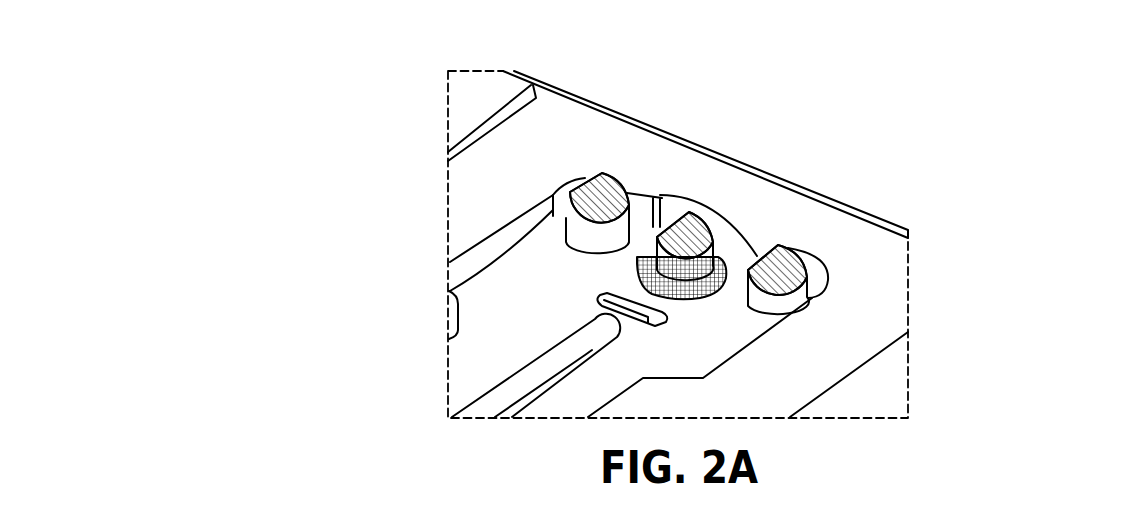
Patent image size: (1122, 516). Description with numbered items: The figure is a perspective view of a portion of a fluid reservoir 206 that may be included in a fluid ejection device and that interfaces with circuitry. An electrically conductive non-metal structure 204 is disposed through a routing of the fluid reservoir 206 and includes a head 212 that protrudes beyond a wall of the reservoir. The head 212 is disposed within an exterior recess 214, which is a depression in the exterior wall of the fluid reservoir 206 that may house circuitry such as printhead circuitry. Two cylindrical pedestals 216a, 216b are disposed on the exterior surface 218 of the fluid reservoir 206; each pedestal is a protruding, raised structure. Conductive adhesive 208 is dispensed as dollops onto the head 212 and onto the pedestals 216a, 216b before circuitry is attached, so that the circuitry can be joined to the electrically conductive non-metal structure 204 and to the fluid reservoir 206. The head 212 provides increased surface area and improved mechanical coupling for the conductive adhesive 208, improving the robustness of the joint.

The electrically conductive non-metal structure 204 is at (636, 268).
The fluid reservoir 206 is at (572, 143).
The conductive adhesive 208 is at (610, 177).
The head 212 is at (695, 302).
The exterior recess 214 is at (503, 222).
The pedestal 216a is at (565, 217).
The pedestal 216b is at (792, 298).
The exterior surface 218 is at (733, 295).